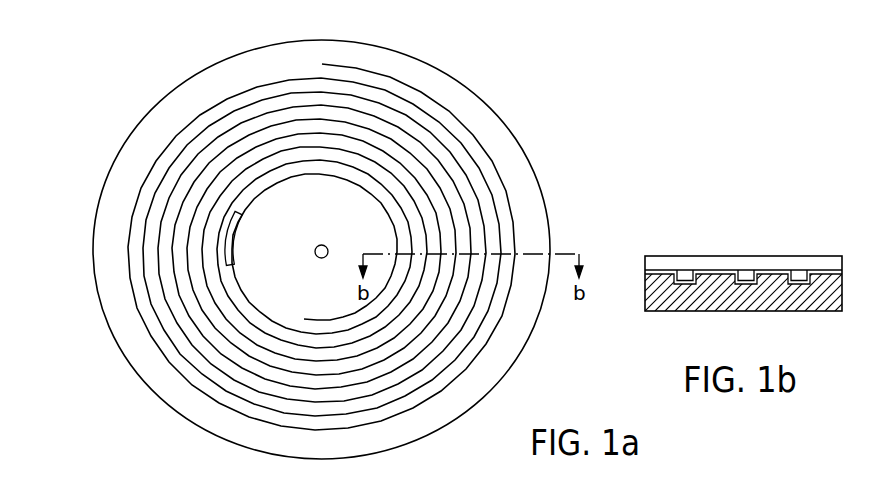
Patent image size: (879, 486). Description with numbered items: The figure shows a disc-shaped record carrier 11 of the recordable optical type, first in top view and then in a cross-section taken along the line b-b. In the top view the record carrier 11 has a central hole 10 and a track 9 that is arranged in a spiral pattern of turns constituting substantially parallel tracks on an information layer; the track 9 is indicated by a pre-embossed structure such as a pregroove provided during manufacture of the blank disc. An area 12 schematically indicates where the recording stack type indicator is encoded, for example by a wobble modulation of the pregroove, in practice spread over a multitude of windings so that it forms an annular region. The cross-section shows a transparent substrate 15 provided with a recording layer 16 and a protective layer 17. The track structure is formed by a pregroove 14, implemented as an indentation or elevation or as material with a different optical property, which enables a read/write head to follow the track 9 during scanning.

In FIG. 1a, the track 9 is at (200, 113).
In FIG. 1a, the central hole 10 is at (322, 245).
In FIG. 1a, the record carrier 11 is at (530, 121).
In FIG. 1b, the record carrier 11 is at (652, 235).
In FIG. 1a, the area 12 is at (237, 254).
In FIG. 1b, the pregroove 14 is at (741, 284).
In FIG. 1b, the transparent substrate 15 is at (664, 306).
In FIG. 1b, the recording layer 16 is at (815, 272).
In FIG. 1b, the protective layer 17 is at (738, 263).